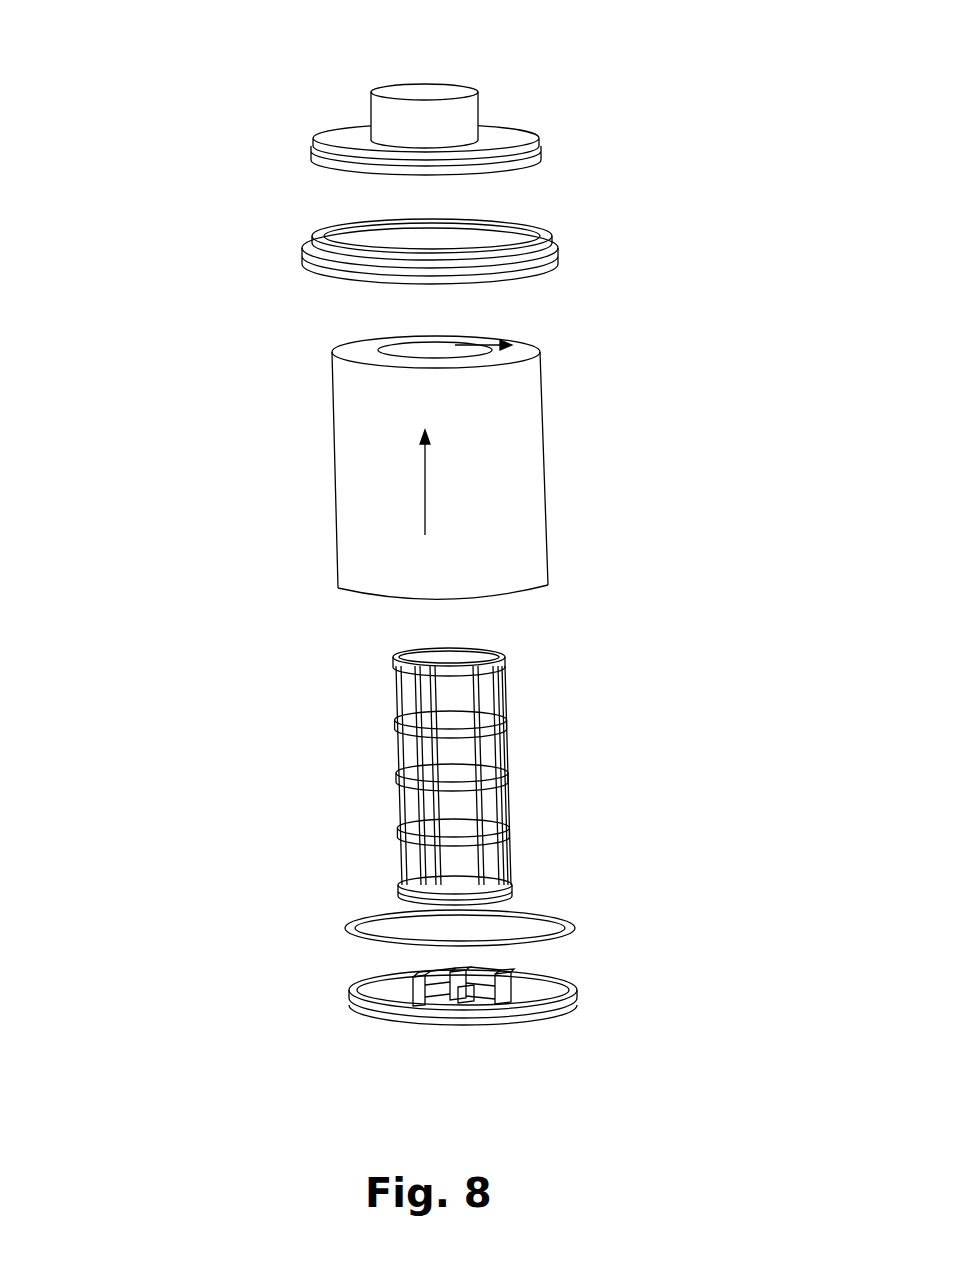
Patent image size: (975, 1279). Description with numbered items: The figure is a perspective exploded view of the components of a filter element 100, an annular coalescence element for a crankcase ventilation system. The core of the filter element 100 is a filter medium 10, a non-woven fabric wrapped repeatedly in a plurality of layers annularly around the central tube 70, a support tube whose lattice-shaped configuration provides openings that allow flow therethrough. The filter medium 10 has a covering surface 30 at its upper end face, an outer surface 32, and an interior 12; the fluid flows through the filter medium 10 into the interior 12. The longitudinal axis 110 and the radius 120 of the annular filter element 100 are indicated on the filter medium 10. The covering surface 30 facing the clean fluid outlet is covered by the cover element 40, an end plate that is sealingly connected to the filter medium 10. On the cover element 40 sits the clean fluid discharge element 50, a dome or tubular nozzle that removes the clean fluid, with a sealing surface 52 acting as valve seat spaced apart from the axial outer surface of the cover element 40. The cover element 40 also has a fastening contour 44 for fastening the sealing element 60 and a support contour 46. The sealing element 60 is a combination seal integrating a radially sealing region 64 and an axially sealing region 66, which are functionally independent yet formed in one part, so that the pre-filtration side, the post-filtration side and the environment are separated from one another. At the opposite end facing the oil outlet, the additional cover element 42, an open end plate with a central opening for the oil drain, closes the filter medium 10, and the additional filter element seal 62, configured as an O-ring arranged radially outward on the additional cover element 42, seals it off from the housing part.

The filter element 100 is at (107, 91).
The cover element 40 is at (280, 106).
The clean fluid discharge element 50 is at (424, 125).
The sealing surface 52 is at (478, 90).
The support contour 46 is at (538, 152).
The fastening contour 44 is at (318, 161).
The sealing element 60 is at (257, 243).
The radially sealing region 64 is at (543, 234).
The axially sealing region 66 is at (313, 265).
The covering surface 30 is at (516, 343).
The outer surface 32 is at (545, 471).
The filter medium 10 is at (428, 396).
The interior 12 is at (446, 355).
The radius 120 is at (468, 342).
The longitudinal axis 110 is at (425, 500).
The central tube 70 is at (507, 730).
The additional filter element seal 62 is at (498, 905).
The additional cover element 42 is at (540, 975).